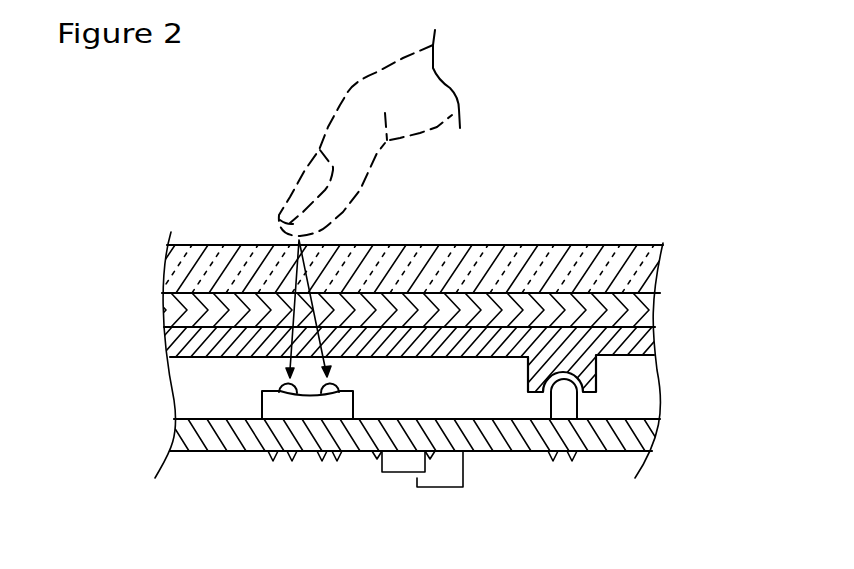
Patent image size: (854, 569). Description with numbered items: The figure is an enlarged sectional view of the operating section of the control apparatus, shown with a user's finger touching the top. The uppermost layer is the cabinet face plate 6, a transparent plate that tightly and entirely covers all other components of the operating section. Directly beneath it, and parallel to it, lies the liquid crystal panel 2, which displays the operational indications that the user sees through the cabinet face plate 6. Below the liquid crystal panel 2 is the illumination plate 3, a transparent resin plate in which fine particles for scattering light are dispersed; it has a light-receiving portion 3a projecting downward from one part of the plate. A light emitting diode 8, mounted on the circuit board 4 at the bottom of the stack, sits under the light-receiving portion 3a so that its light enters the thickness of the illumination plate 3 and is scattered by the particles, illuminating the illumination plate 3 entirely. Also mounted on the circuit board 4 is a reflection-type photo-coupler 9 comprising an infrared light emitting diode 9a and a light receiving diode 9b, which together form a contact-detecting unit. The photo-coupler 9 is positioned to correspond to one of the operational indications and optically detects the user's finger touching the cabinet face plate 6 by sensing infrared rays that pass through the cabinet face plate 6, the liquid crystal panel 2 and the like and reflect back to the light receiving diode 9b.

The liquid crystal panel 2 is at (187, 313).
The illumination plate 3 is at (404, 374).
The light-receiving portion 3a is at (582, 368).
The circuit board 4 is at (502, 430).
The cabinet face plate 6 is at (465, 262).
The light emitting diode 8 is at (565, 400).
The reflection-type photo-coupler 9 is at (310, 462).
The infrared light emitting diode 9a is at (280, 388).
The light receiving diode 9b is at (340, 388).